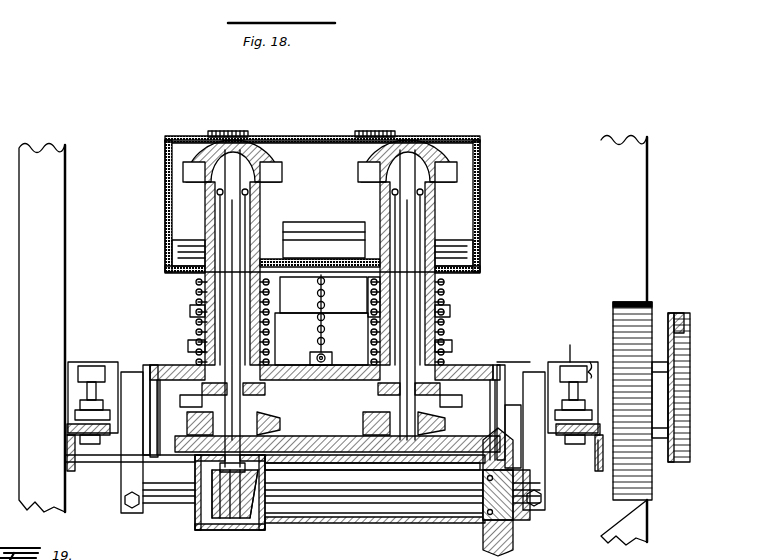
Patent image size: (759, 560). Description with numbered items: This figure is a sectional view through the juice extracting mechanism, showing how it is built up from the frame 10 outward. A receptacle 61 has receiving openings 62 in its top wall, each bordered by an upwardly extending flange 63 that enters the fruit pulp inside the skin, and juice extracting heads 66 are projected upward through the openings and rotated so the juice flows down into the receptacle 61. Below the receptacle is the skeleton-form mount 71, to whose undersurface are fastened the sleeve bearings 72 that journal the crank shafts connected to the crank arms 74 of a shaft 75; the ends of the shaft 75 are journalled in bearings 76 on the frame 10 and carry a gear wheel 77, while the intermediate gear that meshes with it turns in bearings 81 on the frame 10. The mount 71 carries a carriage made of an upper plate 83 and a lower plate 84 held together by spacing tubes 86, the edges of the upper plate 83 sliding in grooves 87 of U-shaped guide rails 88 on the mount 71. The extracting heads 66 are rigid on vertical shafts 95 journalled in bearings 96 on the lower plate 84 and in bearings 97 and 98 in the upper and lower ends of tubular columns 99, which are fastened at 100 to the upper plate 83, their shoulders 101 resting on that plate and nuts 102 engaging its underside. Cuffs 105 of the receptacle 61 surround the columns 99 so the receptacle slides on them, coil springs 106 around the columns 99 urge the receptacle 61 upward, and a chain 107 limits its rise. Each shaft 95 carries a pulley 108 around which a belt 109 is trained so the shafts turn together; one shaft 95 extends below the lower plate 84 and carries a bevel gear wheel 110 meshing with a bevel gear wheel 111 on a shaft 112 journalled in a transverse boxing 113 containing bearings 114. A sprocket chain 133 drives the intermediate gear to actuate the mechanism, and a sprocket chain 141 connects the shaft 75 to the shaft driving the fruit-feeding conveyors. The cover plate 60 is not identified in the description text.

The frame 10 is at (600, 462).
The cover plate 60 is at (481, 146).
The receptacle 61 is at (481, 173).
The receiving openings 62 is at (262, 131).
The flanges 63 is at (283, 136).
The juice extracting heads 66 is at (420, 140).
The mount 71 is at (504, 367).
The sleeve bearings 72 is at (175, 506).
The crank arms 74 is at (122, 372).
The shaft 75 is at (143, 360).
The bearings 76 is at (80, 368).
The gear wheel 77 is at (653, 495).
The bearings 81 is at (601, 518).
The upper plate 83 is at (352, 360).
The lower plate 84 is at (158, 452).
The spacing tubes 86 is at (296, 358).
The grooves 87 is at (150, 364).
The guide rails 88 is at (517, 323).
The vertical shafts 95 is at (220, 207).
The bearings 96 is at (187, 425).
The bearings 97 is at (260, 190).
The bearings 98 is at (442, 311).
The tubular columns 99 is at (258, 216).
The fastening 100 is at (305, 392).
The shoulders 101 is at (203, 333).
The nuts 102 is at (195, 355).
The cuffs 105 is at (205, 222).
The coil springs 106 is at (195, 290).
The chain 107 is at (318, 330).
The pulley 108 is at (200, 394).
The belt 109 is at (292, 420).
The bevel gear wheel 110 is at (200, 526).
The bevel gear wheel 111 is at (252, 530).
The shaft 112 is at (377, 507).
The boxing 113 is at (402, 522).
The bearings 114 is at (470, 522).
The sprocket chain 133 is at (692, 352).
The sprocket chain 141 is at (676, 312).